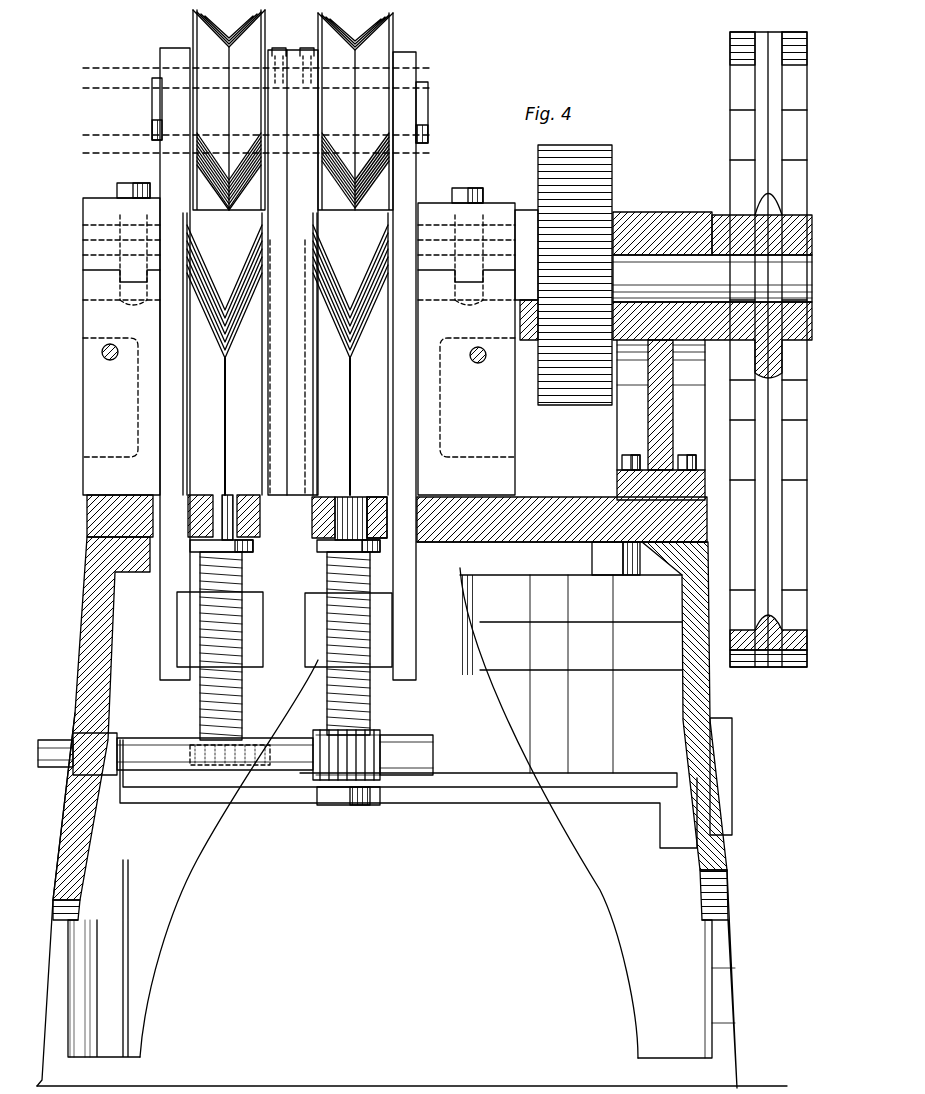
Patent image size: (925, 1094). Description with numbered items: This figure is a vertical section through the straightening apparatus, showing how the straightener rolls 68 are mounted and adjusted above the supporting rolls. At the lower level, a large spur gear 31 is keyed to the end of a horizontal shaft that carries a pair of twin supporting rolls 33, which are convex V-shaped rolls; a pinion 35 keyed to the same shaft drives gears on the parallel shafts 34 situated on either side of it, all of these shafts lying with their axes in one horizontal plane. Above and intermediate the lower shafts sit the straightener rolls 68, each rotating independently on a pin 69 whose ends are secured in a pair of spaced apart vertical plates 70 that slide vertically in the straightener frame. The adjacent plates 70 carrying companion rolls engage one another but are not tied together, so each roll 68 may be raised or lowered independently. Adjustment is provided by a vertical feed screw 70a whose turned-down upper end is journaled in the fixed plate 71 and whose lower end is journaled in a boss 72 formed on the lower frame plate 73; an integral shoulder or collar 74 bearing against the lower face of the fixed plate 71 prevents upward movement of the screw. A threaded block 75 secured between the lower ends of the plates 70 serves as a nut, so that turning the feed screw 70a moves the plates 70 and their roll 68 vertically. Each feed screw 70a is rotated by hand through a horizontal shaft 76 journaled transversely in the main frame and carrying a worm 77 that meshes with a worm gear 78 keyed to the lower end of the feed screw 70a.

The large spur gear 31 is at (769, 663).
The twin supporting roll 33 is at (222, 355).
The shaft 34 is at (712, 257).
The pinion 35 is at (588, 398).
The straightener roll 68 is at (193, 33).
The pin 69 is at (431, 93).
The plate 70 is at (165, 163).
The feed screw 70a is at (418, 585).
The fixed plate 71 is at (323, 497).
The boss 72 is at (368, 807).
The lower frame plate 73 is at (460, 800).
The collar 74 is at (376, 496).
The block 75 is at (185, 642).
The horizontal shaft 76 is at (62, 768).
The worm 77 is at (250, 740).
The worm gear 78 is at (400, 760).